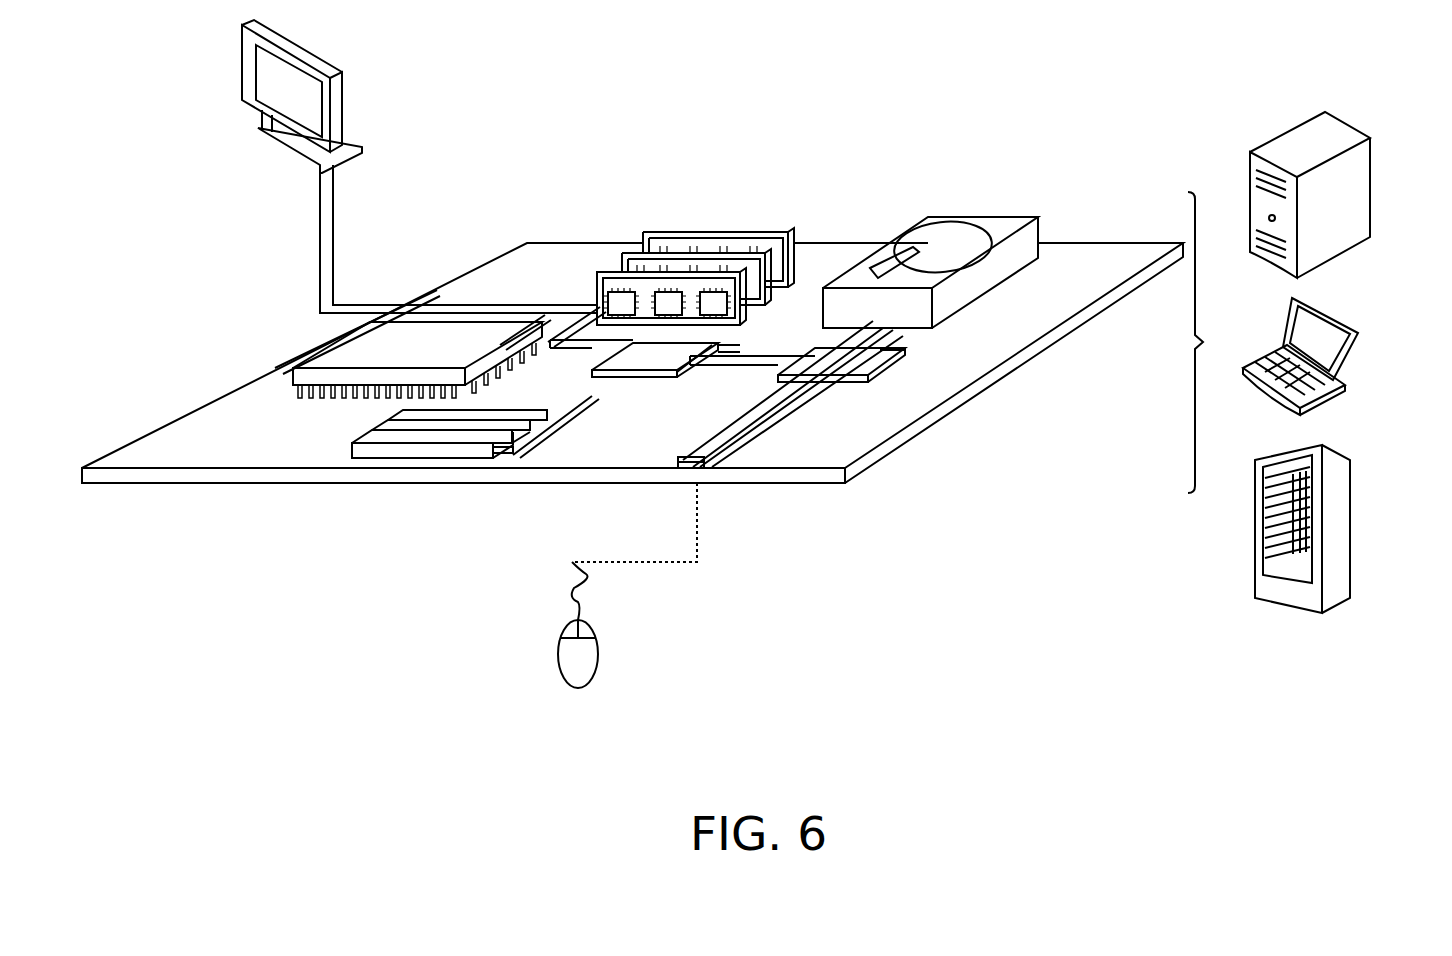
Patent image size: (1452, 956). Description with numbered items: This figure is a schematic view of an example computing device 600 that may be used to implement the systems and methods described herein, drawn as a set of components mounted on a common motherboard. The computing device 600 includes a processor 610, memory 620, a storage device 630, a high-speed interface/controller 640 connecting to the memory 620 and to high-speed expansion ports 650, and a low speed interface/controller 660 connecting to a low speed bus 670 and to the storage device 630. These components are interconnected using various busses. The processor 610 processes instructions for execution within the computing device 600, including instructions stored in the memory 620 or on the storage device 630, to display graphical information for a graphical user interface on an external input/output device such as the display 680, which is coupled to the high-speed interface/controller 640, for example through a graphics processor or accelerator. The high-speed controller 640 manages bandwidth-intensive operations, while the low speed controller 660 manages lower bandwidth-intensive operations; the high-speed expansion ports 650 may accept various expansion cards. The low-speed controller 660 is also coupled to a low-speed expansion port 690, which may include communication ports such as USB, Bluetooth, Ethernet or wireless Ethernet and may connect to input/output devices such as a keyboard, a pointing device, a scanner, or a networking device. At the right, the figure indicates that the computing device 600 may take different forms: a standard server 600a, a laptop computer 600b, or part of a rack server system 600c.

The computing device 600 is at (799, 90).
The standard server 600a is at (1280, 132).
The laptop computer 600b is at (1326, 315).
The rack server system 600c is at (1336, 508).
The processor 610 is at (276, 370).
The memory 620 is at (713, 232).
The storage device 630 is at (969, 217).
The high-speed interface/controller 640 is at (660, 380).
The high-speed expansion ports 650 is at (354, 442).
The low speed interface/controller 660 is at (832, 348).
The low speed bus 670 is at (782, 417).
The display 680 is at (242, 75).
The low-speed expansion port 690 is at (708, 483).